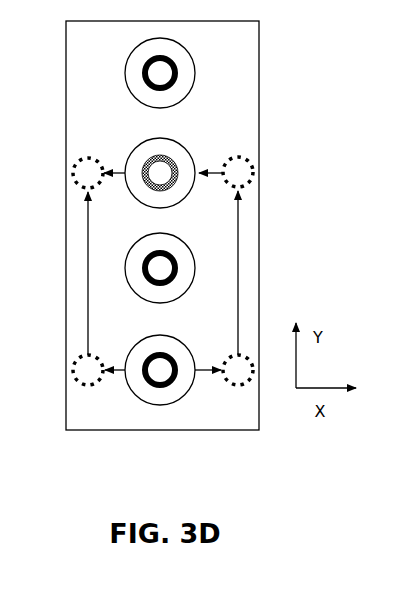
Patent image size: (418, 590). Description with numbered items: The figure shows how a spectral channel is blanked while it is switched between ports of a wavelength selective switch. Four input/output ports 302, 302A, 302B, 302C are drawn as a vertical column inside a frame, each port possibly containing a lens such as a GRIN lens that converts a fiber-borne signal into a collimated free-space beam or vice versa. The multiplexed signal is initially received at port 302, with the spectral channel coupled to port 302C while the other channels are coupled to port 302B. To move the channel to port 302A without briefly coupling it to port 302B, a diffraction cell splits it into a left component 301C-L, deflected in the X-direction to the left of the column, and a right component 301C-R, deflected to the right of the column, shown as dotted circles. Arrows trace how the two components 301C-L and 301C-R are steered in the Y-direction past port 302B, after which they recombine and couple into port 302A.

The input/output port 302 is at (195, 73).
The input/output port 302A is at (184, 147).
The input/output port 302B is at (138, 293).
The input/output port 302C is at (162, 400).
The left component of spectral channel 301C-L is at (77, 358).
The right component of spectral channel 301C-R is at (247, 185).